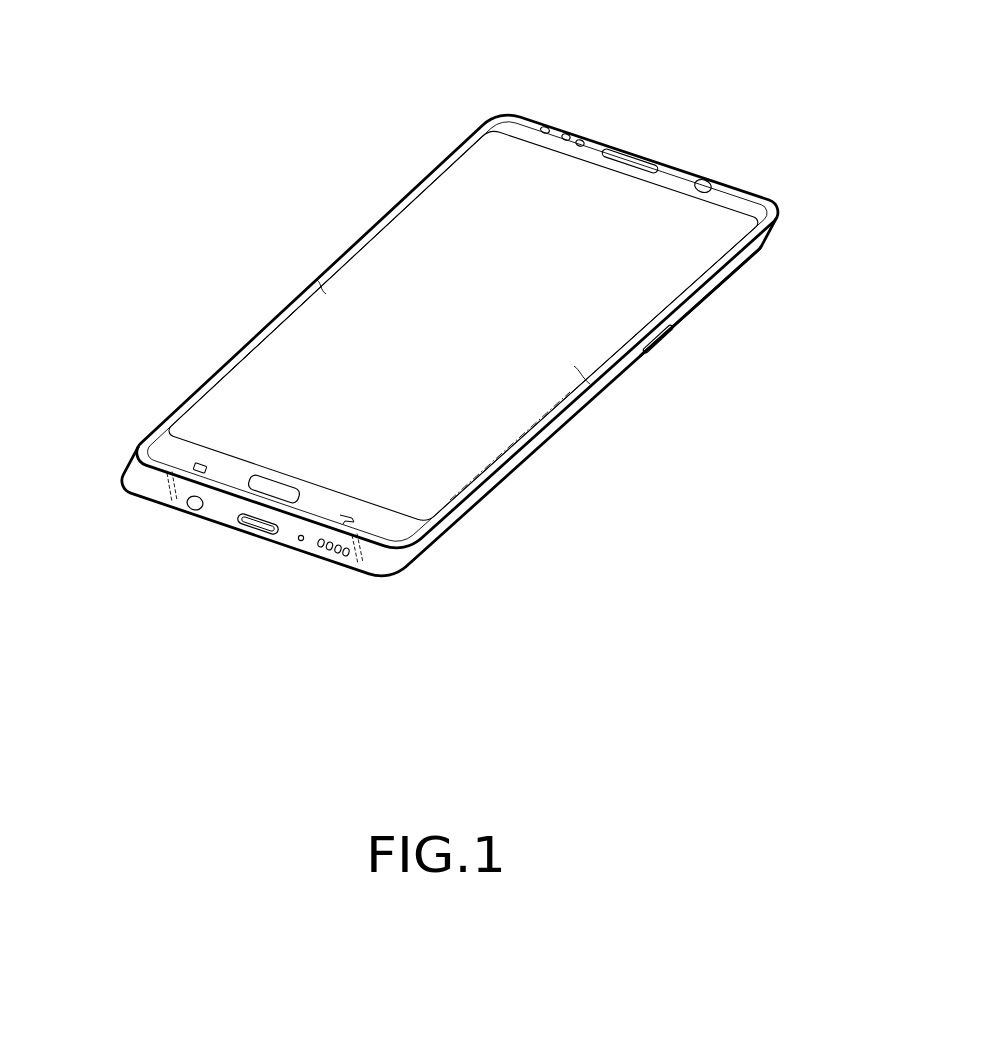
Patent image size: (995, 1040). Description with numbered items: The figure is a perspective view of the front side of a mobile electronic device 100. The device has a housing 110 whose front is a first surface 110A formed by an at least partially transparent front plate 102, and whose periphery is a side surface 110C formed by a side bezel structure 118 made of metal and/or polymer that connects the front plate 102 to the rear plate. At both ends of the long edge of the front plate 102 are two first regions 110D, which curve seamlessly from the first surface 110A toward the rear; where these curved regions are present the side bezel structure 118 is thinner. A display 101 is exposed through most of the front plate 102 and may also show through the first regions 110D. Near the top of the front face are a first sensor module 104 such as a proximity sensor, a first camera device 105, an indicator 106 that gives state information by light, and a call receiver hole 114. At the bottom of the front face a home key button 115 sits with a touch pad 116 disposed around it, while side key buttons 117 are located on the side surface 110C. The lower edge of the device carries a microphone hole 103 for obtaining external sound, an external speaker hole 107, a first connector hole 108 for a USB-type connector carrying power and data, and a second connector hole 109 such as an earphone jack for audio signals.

The electronic device 100 is at (314, 210).
The display 101 is at (255, 408).
The front plate 102 is at (731, 200).
The microphone hole 103 is at (300, 541).
The first sensor module 104 is at (580, 143).
The first camera device 105 is at (704, 186).
The indicator 106 is at (545, 128).
The external speaker hole 107 is at (334, 557).
The first connector hole 108 is at (263, 522).
The second connector hole 109 is at (188, 511).
The housing 110 is at (607, 386).
The first surface 110A is at (476, 247).
The side surface 110C is at (541, 445).
The first regions 110D is at (273, 326).
The call receiver hole 114 is at (633, 163).
The home key button 115 is at (263, 488).
The touch pad 116 is at (133, 480).
The side key buttons 117 is at (664, 338).
The side bezel structure 118 is at (731, 282).